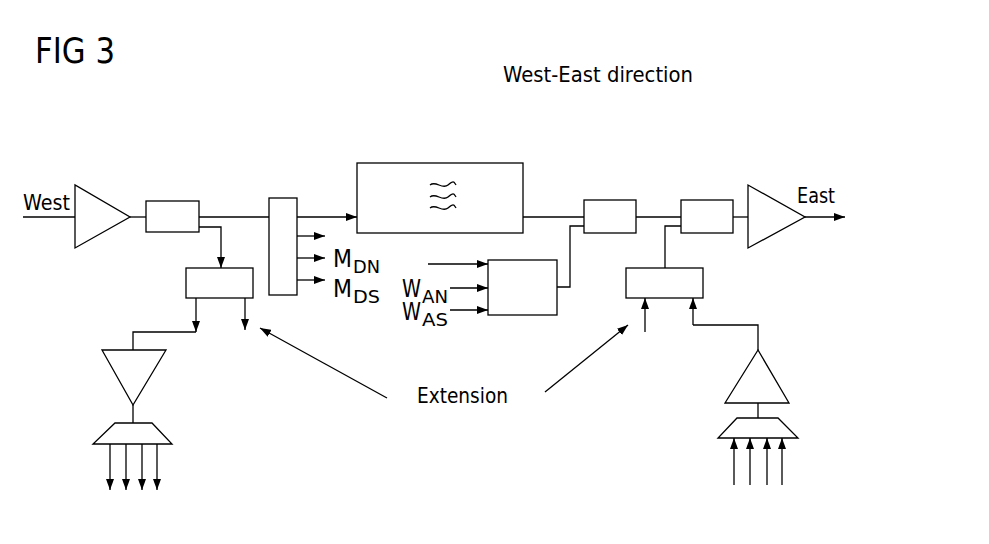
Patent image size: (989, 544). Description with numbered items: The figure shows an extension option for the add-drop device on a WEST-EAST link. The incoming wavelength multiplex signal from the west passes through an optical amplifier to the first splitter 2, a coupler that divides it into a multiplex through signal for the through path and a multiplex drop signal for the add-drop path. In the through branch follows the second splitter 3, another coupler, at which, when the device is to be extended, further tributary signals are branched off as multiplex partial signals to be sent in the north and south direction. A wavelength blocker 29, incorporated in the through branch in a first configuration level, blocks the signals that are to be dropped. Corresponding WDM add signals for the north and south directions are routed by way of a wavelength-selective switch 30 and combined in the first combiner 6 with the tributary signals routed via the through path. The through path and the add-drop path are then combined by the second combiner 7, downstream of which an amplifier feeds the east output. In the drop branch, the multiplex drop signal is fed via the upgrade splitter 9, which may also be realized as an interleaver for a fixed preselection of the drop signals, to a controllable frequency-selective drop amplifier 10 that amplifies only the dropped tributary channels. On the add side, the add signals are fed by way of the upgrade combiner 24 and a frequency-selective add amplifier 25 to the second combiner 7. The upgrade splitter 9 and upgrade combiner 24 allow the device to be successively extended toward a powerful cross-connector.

The first splitter 2 is at (175, 201).
The second splitter 3 is at (283, 198).
The first combiner 6 is at (612, 200).
The second combiner 7 is at (711, 200).
The upgrade splitter 9 is at (186, 283).
The drop amplifier 10 is at (120, 350).
The upgrade combiner 24 is at (703, 288).
The add amplifier 25 is at (773, 370).
The wavelength blocker 29 is at (440, 163).
The wavelength-selective switch 30 is at (523, 315).